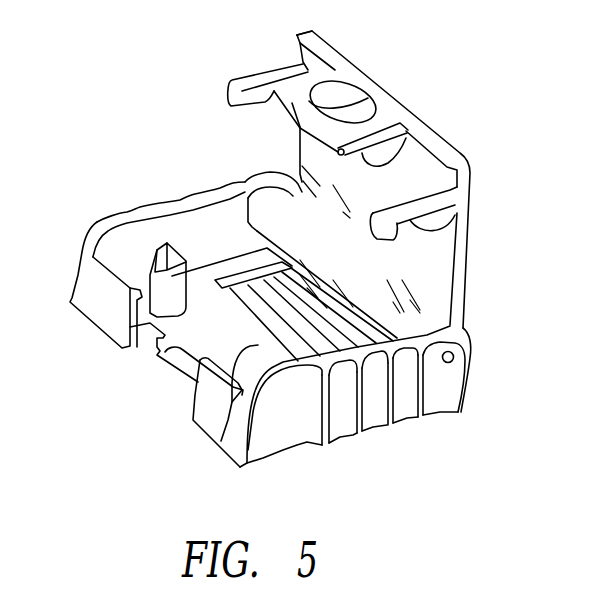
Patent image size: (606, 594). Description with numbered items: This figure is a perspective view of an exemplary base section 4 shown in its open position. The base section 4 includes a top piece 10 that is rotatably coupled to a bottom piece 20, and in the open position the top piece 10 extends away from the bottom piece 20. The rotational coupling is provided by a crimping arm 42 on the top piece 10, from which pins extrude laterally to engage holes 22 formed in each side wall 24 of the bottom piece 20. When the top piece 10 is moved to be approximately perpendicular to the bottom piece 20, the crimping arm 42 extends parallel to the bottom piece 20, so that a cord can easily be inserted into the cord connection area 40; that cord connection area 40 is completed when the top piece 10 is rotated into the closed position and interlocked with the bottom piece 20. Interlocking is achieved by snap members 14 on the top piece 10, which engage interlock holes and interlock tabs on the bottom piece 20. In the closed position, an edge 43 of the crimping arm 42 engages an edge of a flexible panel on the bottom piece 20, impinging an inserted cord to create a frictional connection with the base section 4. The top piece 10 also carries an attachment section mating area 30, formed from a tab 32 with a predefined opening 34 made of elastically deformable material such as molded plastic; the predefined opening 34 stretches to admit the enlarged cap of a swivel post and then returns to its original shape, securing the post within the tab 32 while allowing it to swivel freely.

The base section 4 is at (157, 390).
The top piece 10 is at (467, 290).
The snap members 14 is at (231, 100).
The bottom piece 20 is at (222, 440).
The holes 22 is at (453, 357).
The side wall 24 is at (368, 403).
The attachment section mating area 30 is at (338, 53).
The tab 32 is at (290, 100).
The predefined opening 34 is at (355, 108).
The cord connection area 40 is at (262, 253).
The crimping arm 42 is at (288, 209).
The edge 43 is at (247, 228).